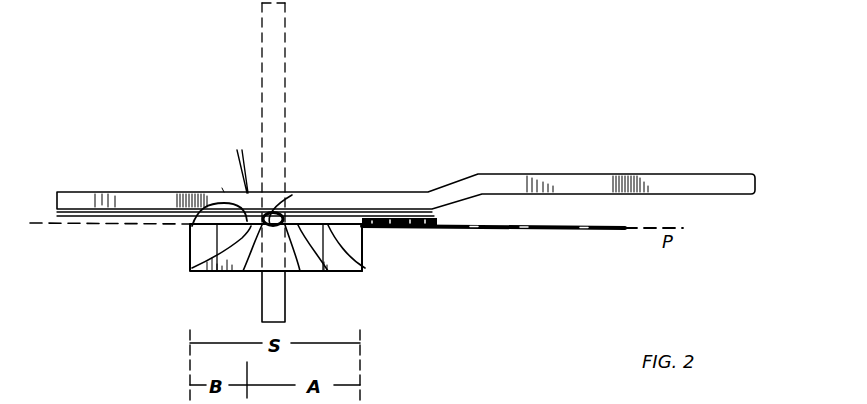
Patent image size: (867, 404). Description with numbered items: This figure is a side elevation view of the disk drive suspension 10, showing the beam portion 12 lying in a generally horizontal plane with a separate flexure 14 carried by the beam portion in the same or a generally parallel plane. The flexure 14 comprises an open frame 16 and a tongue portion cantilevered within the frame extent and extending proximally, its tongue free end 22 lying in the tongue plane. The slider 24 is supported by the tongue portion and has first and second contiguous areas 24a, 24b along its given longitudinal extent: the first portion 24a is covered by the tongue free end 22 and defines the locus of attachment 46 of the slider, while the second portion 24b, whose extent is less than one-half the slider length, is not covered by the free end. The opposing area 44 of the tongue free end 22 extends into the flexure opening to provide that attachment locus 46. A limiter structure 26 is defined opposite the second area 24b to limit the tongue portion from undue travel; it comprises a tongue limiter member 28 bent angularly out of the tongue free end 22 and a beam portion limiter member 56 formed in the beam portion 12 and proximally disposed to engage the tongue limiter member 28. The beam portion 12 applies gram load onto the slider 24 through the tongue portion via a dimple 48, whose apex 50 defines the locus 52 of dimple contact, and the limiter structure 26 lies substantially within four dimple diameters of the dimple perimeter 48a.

The suspension 10 is at (93, 95).
The beam portion 12 is at (127, 192).
The flexure 14 is at (543, 230).
The open frame 16 is at (320, 224).
The tongue free end 22 is at (330, 272).
The slider 24 is at (237, 271).
The first portion of slider 24a is at (360, 238).
The second portion of slider 24b is at (190, 271).
The limiter structure 26 is at (252, 142).
The tongue limiter member 28 is at (240, 163).
The opposing area of tongue free end 44 is at (197, 223).
The locus of attachment 46 is at (347, 220).
The dimple 48 is at (268, 213).
The dimple perimeter 48a is at (297, 218).
The apex of dimple 50 is at (300, 271).
The locus of dimple contact 52 is at (243, 271).
The beam portion limiter member 56 is at (222, 188).